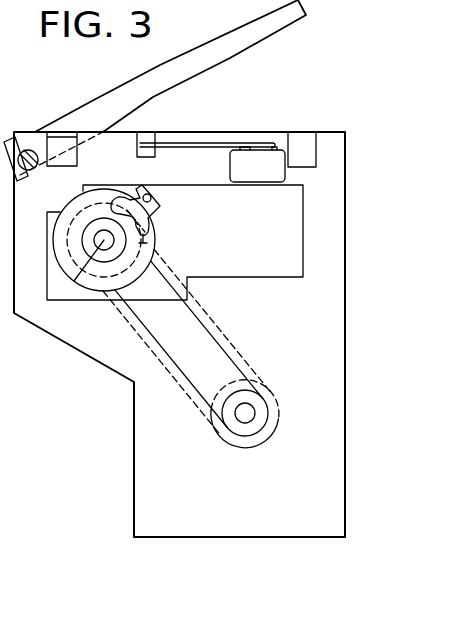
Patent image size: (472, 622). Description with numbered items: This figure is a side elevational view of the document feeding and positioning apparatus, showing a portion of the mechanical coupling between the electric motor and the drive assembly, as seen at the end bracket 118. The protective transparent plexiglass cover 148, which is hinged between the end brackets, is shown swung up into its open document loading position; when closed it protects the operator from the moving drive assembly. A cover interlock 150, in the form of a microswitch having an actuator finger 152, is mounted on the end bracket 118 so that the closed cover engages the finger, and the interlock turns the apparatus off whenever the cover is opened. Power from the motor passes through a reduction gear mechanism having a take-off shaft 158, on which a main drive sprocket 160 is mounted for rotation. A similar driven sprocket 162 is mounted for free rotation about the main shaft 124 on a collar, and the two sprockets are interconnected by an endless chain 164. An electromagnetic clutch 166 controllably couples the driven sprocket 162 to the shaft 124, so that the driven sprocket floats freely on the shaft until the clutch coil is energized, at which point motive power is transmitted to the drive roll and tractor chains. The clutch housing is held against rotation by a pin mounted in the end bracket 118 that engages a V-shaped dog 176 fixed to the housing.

The end bracket 118 is at (113, 365).
The main shaft 124 is at (66, 280).
The protective transparent plexiglass cover 148 is at (280, 22).
The cover interlock 150 is at (238, 165).
The actuator finger 152 is at (213, 143).
The take-off shaft 158 is at (250, 412).
The main drive sprocket 160 is at (242, 390).
The driven sprocket 162 is at (158, 241).
The endless chain 164 is at (197, 404).
The electromagnetic clutch 166 is at (145, 260).
The V-shaped dog 176 is at (158, 207).